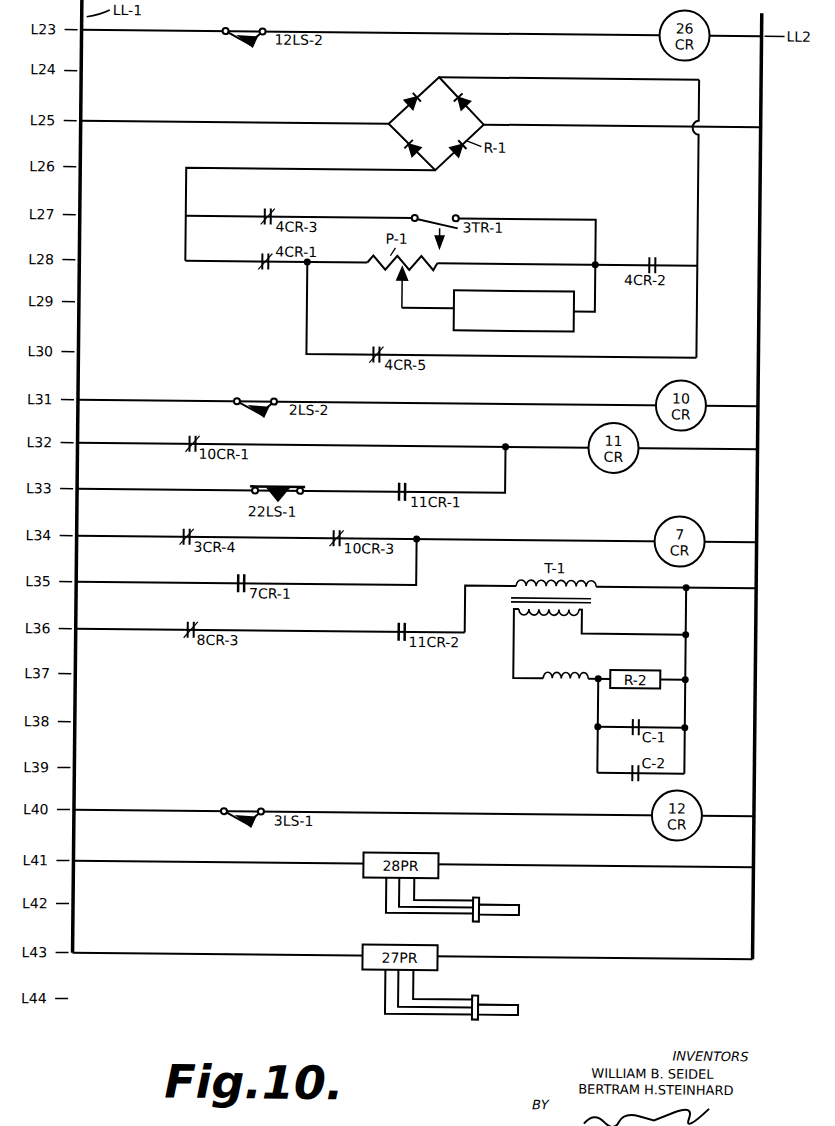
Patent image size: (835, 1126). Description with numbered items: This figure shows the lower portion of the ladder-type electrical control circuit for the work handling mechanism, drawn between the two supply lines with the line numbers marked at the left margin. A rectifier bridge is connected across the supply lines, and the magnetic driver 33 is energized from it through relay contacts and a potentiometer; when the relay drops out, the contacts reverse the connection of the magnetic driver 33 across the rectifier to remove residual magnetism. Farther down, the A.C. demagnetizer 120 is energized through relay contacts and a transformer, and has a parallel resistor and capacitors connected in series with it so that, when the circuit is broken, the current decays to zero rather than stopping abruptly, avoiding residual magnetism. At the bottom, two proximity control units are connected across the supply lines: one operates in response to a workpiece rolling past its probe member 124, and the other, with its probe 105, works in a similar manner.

The magnetic driver 33 is at (572, 330).
The A.C. demagnetizer 120 is at (560, 683).
The probe member 124 is at (515, 902).
The probe 105 is at (515, 1003).